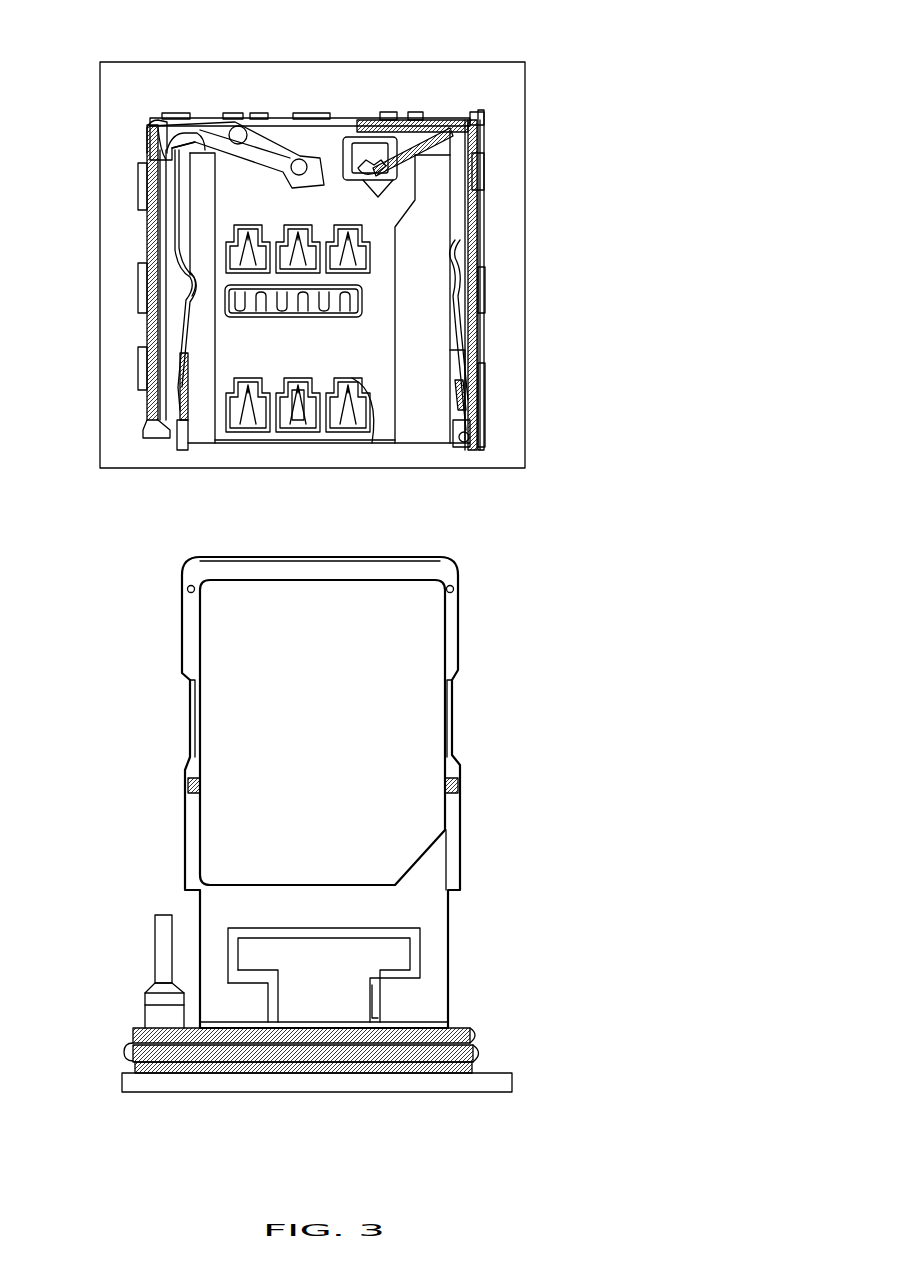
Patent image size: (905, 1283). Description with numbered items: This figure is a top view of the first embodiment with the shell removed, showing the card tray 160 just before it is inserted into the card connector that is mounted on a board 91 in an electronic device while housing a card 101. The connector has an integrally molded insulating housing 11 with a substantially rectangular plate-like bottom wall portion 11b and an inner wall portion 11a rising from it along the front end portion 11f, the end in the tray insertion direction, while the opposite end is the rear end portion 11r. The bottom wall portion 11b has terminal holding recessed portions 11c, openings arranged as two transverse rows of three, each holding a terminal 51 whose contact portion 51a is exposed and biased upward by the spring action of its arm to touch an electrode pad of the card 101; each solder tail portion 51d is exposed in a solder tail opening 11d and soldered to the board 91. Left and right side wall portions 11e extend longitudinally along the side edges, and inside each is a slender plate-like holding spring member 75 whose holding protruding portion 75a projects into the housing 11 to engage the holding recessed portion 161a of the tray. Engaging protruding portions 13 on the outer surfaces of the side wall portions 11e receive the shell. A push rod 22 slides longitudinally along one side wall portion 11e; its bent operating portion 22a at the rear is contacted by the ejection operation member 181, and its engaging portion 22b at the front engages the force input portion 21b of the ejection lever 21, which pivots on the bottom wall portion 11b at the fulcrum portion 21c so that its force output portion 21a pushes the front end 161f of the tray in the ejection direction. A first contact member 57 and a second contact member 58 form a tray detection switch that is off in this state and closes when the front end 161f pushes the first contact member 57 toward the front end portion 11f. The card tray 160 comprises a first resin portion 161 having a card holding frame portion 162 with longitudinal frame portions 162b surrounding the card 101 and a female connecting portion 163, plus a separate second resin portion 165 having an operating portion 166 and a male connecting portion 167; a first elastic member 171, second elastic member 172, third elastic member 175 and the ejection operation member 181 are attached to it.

The housing 11 is at (458, 450).
The inner wall portion 11a is at (345, 118).
The bottom wall portion 11b is at (468, 368).
The terminal holding recessed portion 11c is at (368, 432).
The solder tail opening 11d is at (363, 292).
The side wall portion 11e is at (484, 240).
The front end portion 11f is at (286, 113).
The rear end portion 11r is at (240, 443).
The engaging protruding portion 13 is at (484, 215).
The ejection lever 21 is at (222, 120).
The force output portion 21a is at (290, 180).
The force input portion 21b is at (160, 120).
The fulcrum portion 21c is at (238, 126).
The push rod 22 is at (140, 360).
The operating portion 22a is at (177, 440).
The engaging portion 22b is at (148, 132).
The terminal 51 is at (340, 432).
The contact portion 51a is at (322, 432).
The solder tail portion 51d is at (470, 327).
The first contact member 57 is at (410, 125).
The second contact member 58 is at (372, 120).
The holding spring member 75 is at (190, 212).
The holding protruding portion 75a is at (146, 320).
The board 91 is at (510, 92).
The card 101 is at (397, 740).
The card tray 160 is at (484, 779).
The first resin portion 161 is at (450, 930).
The holding recessed portion 161a is at (185, 702).
The front end 161f is at (410, 558).
The card holding frame portion 162 is at (462, 830).
The first longitudinal frame portion 162b is at (460, 664).
The female connecting portion 163 is at (205, 955).
The second resin portion 165 is at (512, 1080).
The operating portion 166 is at (480, 1030).
The male connecting portion 167 is at (415, 950).
The first elastic member 171 is at (124, 1052).
The second elastic member 172 is at (400, 995).
The third elastic member 175 is at (145, 995).
The ejection operation member 181 is at (155, 930).